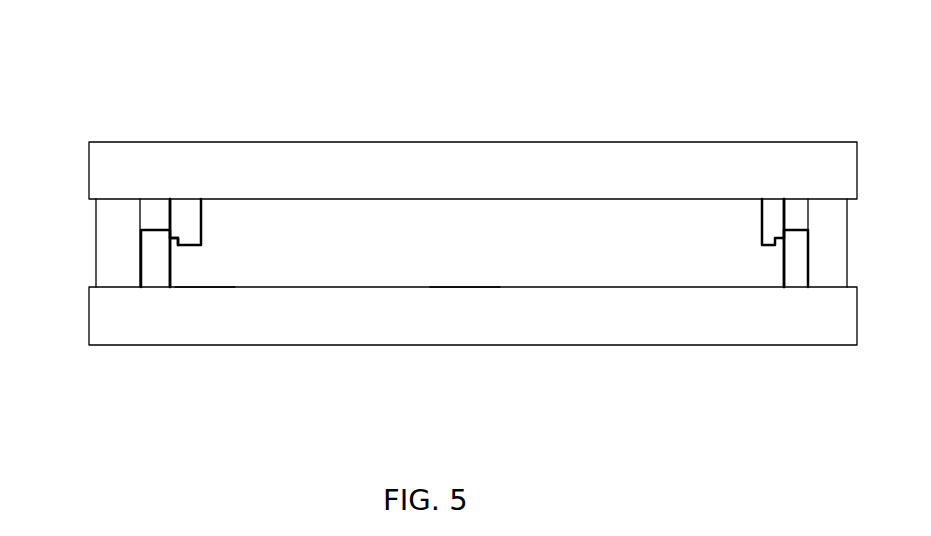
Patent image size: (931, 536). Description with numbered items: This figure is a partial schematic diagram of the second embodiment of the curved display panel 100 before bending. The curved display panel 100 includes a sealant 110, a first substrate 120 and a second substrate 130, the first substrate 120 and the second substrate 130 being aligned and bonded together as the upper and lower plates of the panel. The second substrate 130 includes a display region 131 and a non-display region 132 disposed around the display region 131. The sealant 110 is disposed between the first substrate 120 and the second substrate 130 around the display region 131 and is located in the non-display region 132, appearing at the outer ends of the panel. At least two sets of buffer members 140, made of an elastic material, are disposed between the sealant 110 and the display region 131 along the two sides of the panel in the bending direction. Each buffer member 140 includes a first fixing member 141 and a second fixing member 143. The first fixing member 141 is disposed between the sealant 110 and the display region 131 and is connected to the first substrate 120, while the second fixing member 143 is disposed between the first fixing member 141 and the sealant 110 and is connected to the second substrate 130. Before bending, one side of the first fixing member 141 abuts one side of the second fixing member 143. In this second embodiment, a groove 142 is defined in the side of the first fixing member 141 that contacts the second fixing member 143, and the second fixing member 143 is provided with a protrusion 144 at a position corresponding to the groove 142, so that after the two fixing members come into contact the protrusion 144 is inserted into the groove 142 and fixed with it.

The curved display panel 100 is at (136, 48).
The sealant 110 is at (132, 208).
The first substrate 120 is at (458, 165).
The second substrate 130 is at (388, 318).
The display region 131 is at (465, 288).
The non-display region 132 is at (207, 287).
The buffer member 140 is at (456, 256).
The first fixing member 141 is at (192, 240).
The groove 142 is at (173, 236).
The second fixing member 143 is at (162, 255).
The protrusion 144 is at (176, 240).